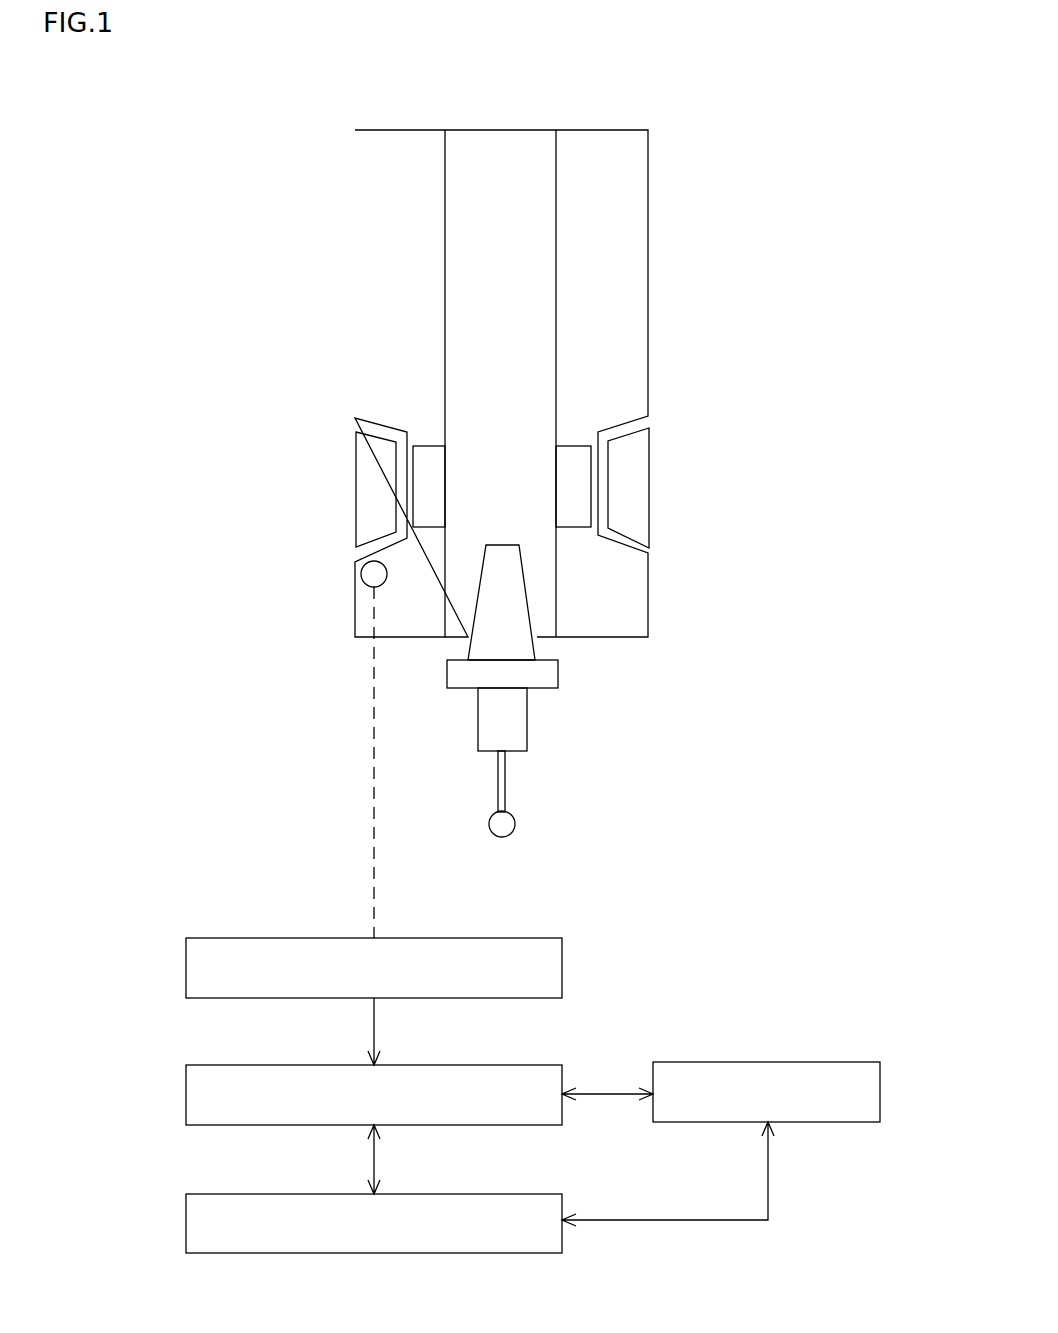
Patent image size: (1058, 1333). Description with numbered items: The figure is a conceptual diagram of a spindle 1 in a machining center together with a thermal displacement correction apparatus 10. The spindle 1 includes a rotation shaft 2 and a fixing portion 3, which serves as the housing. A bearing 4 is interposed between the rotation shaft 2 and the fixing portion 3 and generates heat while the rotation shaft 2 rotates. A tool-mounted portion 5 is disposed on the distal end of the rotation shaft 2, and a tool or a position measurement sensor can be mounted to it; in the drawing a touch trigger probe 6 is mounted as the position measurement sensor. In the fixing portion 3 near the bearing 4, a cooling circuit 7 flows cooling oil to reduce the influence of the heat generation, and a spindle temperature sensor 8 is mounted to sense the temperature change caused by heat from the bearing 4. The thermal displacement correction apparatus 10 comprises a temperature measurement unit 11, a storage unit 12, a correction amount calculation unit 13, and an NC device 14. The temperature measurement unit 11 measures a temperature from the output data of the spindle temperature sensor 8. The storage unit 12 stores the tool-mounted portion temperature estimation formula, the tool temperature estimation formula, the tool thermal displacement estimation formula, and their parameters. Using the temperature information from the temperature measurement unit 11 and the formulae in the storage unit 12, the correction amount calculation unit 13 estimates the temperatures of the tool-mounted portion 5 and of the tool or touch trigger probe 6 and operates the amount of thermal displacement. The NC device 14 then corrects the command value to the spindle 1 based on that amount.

The spindle 1 is at (649, 163).
The rotation shaft 2 is at (499, 147).
The fixing portion 3 is at (373, 197).
The bearing 4 is at (432, 453).
The tool-mounted portion 5 is at (527, 593).
The touch trigger probe 6 is at (512, 726).
The cooling circuit 7 is at (400, 477).
The spindle temperature sensor 8 is at (368, 575).
The thermal displacement correction apparatus 10 is at (118, 902).
The temperature measurement unit 11 is at (202, 938).
The storage unit 12 is at (865, 1062).
The correction amount calculation unit 13 is at (203, 1065).
The NC device 14 is at (203, 1194).